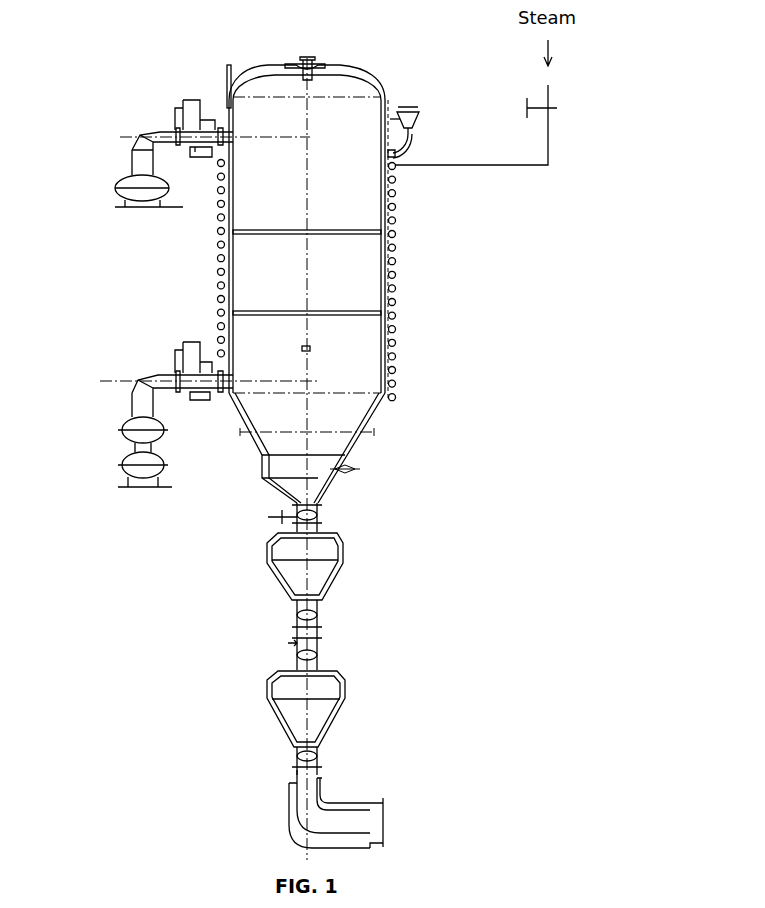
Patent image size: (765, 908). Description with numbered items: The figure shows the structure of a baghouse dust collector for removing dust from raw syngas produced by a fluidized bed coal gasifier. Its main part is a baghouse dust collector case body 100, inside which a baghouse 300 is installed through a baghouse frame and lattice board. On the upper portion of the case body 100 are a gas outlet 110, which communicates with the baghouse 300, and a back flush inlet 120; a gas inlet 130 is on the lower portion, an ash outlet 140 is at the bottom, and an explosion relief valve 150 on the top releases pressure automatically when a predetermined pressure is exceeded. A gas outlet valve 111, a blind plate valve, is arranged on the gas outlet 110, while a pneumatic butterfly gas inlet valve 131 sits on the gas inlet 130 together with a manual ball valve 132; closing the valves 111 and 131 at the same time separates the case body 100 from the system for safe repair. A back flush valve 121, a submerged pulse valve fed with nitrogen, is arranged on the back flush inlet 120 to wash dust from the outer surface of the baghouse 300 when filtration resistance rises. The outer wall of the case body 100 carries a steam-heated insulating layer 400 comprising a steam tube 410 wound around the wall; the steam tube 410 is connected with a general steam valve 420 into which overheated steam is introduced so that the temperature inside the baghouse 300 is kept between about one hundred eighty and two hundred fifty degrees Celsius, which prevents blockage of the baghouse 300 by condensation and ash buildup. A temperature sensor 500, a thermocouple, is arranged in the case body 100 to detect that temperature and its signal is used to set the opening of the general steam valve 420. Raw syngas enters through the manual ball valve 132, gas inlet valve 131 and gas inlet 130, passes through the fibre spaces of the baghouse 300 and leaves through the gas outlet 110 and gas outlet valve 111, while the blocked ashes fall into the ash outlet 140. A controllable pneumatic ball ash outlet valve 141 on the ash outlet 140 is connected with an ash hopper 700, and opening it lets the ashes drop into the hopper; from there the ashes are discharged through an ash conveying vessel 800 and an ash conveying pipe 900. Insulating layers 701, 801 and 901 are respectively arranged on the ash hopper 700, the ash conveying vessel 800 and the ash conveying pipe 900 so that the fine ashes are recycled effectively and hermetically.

The baghouse dust collector case body 100 is at (398, 360).
The gas outlet 110 is at (232, 135).
The gas outlet valve 111 is at (138, 141).
The back flush inlet 120 is at (392, 154).
The back flush valve 121 is at (418, 115).
The gas inlet 130 is at (220, 372).
The gas inlet valve 131 is at (122, 425).
The manual ball valve 132 is at (122, 460).
The ash outlet 140 is at (322, 516).
The ash outlet valve 141 is at (282, 517).
The explosion relief valve 150 is at (312, 60).
The baghouse 300 is at (350, 277).
The steam-heated insulating layer 400 is at (399, 243).
The steam tube 410 is at (396, 305).
The general steam valve 420 is at (553, 110).
The temperature sensor 500 is at (231, 88).
The ash hopper 700 is at (330, 545).
The insulating layer 701 is at (340, 575).
The ash conveying vessel 800 is at (325, 700).
The insulating layer 801 is at (322, 733).
The ash conveying pipe 900 is at (362, 822).
The insulating layer 901 is at (385, 797).